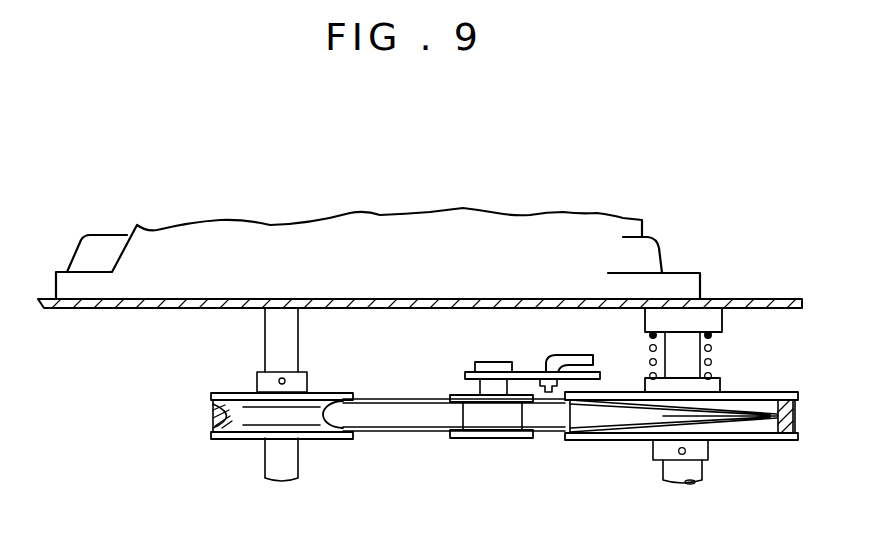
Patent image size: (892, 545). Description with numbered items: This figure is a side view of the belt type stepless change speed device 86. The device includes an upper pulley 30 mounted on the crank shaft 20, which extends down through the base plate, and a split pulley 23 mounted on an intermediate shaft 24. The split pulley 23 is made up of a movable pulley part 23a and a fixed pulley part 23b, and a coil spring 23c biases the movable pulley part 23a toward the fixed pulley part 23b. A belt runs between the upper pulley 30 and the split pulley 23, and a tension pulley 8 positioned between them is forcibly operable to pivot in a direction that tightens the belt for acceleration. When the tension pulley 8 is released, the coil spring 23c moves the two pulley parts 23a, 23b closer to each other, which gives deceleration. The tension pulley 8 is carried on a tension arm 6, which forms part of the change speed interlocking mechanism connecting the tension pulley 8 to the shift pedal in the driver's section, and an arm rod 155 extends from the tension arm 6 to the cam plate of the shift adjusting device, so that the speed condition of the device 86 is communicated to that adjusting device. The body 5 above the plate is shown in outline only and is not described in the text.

The body cover 5 is at (645, 223).
The tension arm 6 is at (523, 370).
The tension pulley 8 is at (455, 395).
The crank shaft 20 is at (272, 340).
The split pulley 23 is at (584, 451).
The movable pulley part 23a is at (762, 393).
The fixed pulley part 23b is at (757, 440).
The coil spring 23c is at (712, 345).
The intermediate shaft 24 is at (662, 472).
The upper pulley 30 is at (236, 440).
The stepless change speed device 86 is at (403, 467).
The arm rod 155 is at (570, 355).